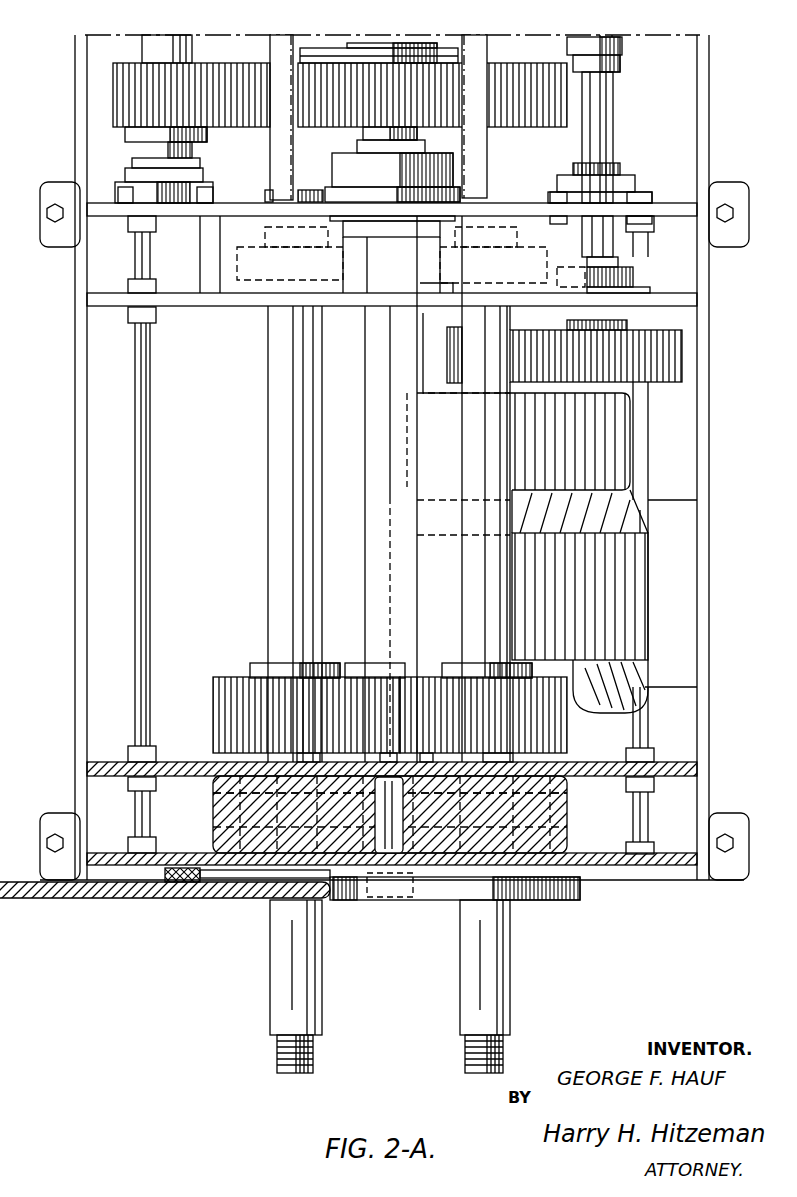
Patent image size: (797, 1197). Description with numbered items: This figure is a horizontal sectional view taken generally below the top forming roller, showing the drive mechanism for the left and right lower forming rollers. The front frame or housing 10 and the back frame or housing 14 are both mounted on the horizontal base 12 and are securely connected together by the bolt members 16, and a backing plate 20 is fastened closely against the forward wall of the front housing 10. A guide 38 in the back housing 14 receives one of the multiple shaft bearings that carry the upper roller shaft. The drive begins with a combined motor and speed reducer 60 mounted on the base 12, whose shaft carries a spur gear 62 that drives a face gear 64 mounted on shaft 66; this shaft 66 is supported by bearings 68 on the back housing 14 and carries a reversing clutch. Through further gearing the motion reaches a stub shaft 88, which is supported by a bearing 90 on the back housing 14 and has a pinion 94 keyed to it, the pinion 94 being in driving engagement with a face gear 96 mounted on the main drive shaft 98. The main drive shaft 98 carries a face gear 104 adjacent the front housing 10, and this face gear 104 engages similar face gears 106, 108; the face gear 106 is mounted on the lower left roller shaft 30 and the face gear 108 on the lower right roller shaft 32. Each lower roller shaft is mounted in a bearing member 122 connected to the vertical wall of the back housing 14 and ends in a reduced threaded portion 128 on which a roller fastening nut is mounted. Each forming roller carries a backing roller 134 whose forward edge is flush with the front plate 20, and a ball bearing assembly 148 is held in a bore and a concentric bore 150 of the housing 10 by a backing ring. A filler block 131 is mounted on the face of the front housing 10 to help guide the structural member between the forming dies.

The front frame or housing 10 is at (98, 767).
The horizontal base 12 is at (98, 467).
The back frame or housing 14 is at (110, 303).
The bolt members 16 is at (145, 565).
The backing plate 20 is at (90, 888).
The drive shaft 30 is at (315, 1010).
The drive shaft 32 is at (510, 1010).
The guide 38 is at (447, 267).
The combined motor and speed reducer 60 is at (643, 597).
The spur gear 62 is at (447, 348).
The face gear 64 is at (673, 362).
The shaft 66 is at (610, 122).
The bearings 68 is at (635, 180).
The stub shaft 88 is at (168, 50).
The bearing 90 is at (200, 182).
The pinion 94 is at (125, 100).
The face gear 96 is at (518, 125).
The main drive shaft 98 is at (370, 378).
The face gear 104 is at (387, 697).
The face gear 106 is at (220, 710).
The face gear 108 is at (562, 738).
The bearing member 122 is at (238, 287).
The reduced threaded portion 128 is at (313, 1067).
The filler block 131 is at (408, 892).
The backing roller 134 is at (345, 898).
The ball bearing assembly 148 is at (230, 827).
The concentric bore 150 is at (248, 793).